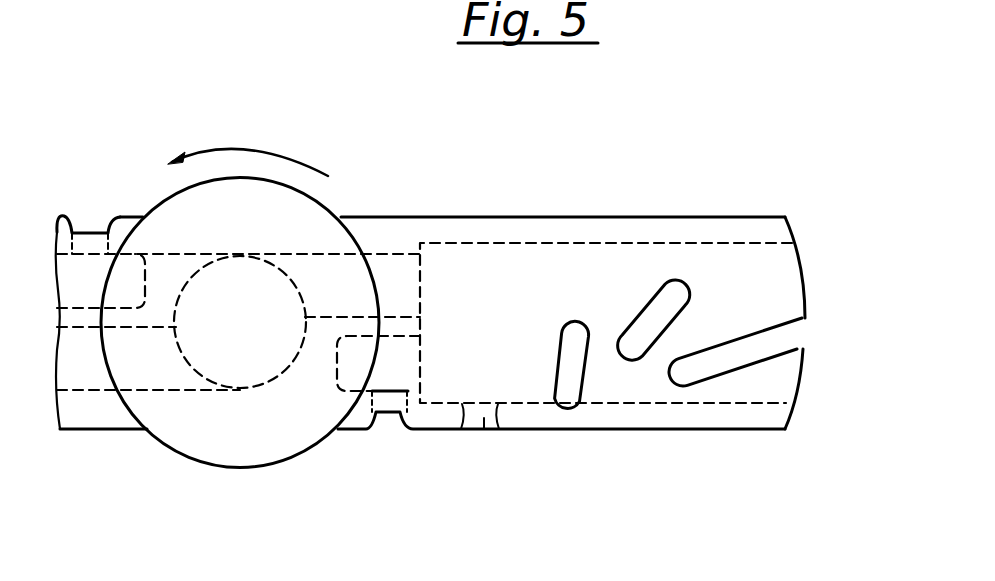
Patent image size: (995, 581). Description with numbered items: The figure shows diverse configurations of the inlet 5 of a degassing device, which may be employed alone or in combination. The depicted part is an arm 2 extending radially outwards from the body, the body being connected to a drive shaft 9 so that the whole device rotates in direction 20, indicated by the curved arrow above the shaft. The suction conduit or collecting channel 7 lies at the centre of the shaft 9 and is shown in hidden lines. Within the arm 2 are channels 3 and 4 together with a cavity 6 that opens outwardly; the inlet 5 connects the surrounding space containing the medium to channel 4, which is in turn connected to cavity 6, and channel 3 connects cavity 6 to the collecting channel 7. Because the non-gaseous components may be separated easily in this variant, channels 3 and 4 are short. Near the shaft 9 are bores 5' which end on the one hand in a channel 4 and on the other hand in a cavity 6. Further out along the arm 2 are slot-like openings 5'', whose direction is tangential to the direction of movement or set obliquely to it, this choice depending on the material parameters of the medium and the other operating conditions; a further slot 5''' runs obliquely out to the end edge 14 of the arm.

The arm 2 is at (490, 240).
The channel 3 is at (398, 285).
The channel 4 is at (390, 362).
The inlet 5 is at (88, 188).
The bores 5' is at (437, 449).
The slot-like openings 5'' is at (622, 340).
The edge slot 5''' is at (735, 329).
The cavity 6 is at (695, 277).
The suction conduit or collecting channel 7 is at (210, 340).
The drive shaft 9 is at (287, 422).
The end edge 14 is at (805, 260).
The direction of rotation 20 is at (272, 150).